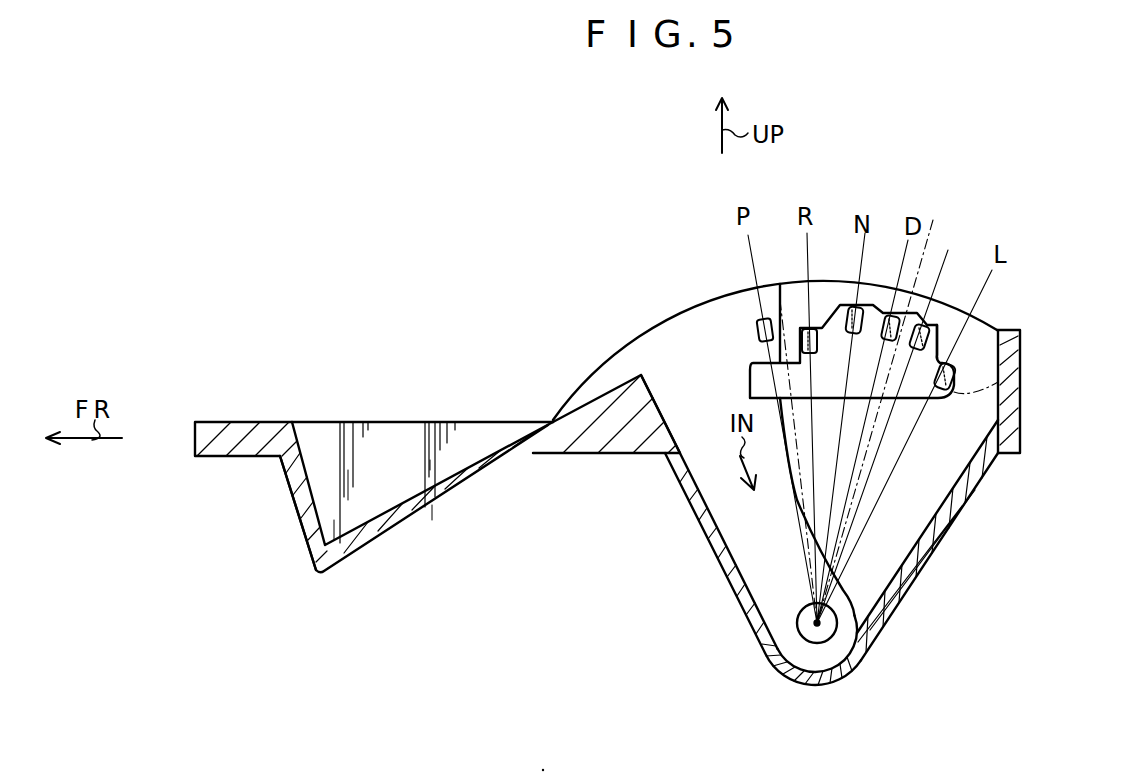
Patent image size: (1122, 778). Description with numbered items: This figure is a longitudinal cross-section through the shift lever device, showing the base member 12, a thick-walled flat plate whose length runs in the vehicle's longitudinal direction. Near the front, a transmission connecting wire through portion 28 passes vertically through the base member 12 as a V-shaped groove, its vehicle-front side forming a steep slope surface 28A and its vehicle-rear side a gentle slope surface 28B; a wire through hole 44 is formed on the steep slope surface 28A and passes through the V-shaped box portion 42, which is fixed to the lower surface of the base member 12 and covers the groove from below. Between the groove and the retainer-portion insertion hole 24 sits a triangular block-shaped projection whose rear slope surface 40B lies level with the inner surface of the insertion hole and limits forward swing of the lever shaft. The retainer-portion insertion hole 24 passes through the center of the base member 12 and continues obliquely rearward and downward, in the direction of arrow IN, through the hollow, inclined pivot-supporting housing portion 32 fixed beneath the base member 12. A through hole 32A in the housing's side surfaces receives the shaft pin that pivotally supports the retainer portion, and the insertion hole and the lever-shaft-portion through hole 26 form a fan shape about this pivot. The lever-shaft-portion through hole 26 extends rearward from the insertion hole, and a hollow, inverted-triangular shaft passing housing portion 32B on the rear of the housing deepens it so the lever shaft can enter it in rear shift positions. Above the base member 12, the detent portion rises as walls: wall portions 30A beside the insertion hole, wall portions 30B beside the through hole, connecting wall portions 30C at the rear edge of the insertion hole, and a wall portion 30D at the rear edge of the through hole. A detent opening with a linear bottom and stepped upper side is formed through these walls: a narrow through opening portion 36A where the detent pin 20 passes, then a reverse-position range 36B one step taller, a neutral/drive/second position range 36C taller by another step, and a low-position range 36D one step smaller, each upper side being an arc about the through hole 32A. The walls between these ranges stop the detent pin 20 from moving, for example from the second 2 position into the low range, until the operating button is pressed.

The base member 12 is at (372, 368).
The transmission connecting wire through portion 28 is at (388, 443).
The steep slope surface 28A is at (296, 440).
The gentle slope surface 28B is at (488, 452).
The wire through hole 44 is at (294, 497).
The V-shaped box portion 42 is at (424, 517).
The slope surface 40B is at (660, 403).
The retainer-portion insertion hole 24 is at (733, 540).
The pivot-supporting housing portion 32 is at (702, 506).
The through hole 32A is at (823, 632).
The shaft passing housing portion 32B is at (965, 505).
The lever-shaft-portion through hole 26 is at (905, 548).
The wall portion 30A is at (695, 324).
The wall portion 30B is at (962, 312).
The wall portion 30C is at (762, 312).
The wall portion 30D is at (1012, 328).
The through opening portion 36A is at (744, 318).
The reverse-position range 36B is at (847, 305).
The neutral/drive/second position range 36C is at (878, 310).
The low-position range 36D is at (928, 402).
The detent pin 20 is at (746, 316).
The second shift range 2 is at (890, 422).